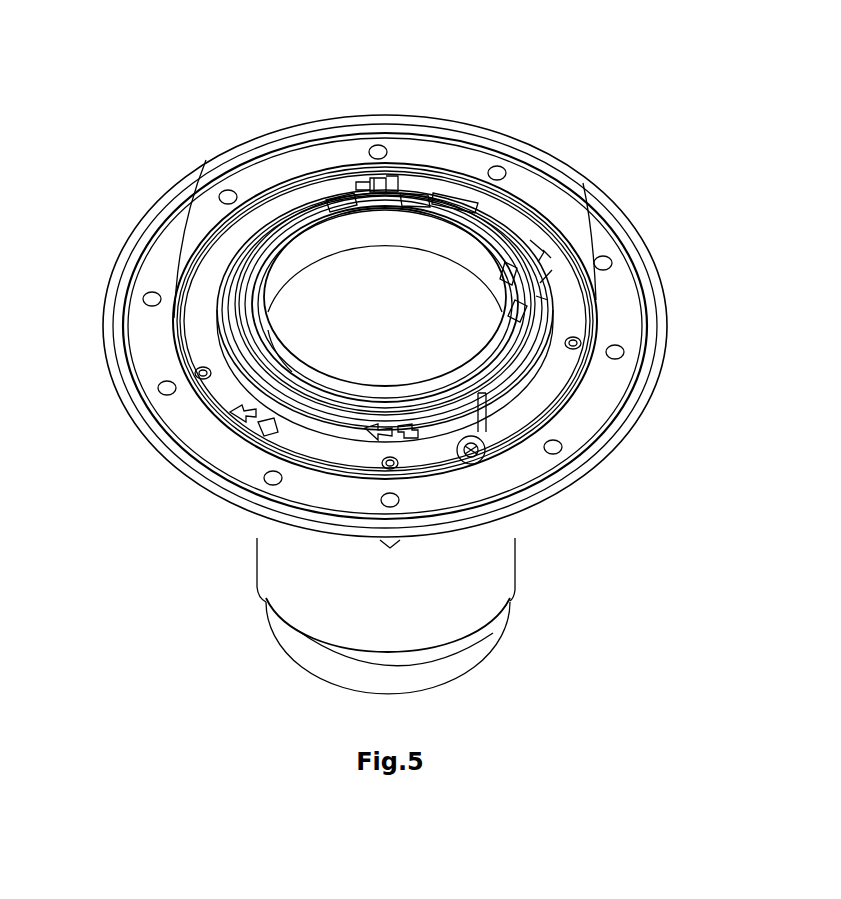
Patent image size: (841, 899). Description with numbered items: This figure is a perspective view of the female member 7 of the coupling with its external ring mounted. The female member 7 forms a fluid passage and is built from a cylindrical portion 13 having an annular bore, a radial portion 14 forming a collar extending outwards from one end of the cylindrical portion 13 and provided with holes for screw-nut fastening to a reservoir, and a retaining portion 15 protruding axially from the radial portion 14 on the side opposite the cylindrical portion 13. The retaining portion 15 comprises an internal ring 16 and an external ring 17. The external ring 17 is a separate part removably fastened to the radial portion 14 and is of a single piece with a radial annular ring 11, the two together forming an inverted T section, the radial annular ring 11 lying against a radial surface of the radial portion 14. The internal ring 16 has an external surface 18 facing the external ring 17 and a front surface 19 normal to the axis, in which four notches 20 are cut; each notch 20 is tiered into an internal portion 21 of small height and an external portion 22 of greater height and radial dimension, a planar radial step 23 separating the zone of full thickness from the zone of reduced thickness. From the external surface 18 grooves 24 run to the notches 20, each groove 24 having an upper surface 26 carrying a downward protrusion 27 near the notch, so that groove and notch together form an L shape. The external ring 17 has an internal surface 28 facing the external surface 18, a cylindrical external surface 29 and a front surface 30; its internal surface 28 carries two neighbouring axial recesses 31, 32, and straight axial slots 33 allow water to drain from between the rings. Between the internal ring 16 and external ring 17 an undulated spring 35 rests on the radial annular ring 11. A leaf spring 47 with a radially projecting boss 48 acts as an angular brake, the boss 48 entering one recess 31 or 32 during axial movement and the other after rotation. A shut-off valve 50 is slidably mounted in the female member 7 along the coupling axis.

The female member 7 is at (573, 95).
The radial annular ring 11 is at (566, 329).
The cylindrical portion 13 is at (379, 613).
The radial portion 14 is at (583, 183).
The retaining portion 15 is at (305, 364).
The internal ring 16 is at (303, 330).
The external ring 17 is at (428, 187).
The external surface 18 is at (245, 322).
The front surface 19 is at (325, 207).
The notches 20 is at (510, 282).
The internal portion 21 is at (404, 196).
The external portion 22 is at (245, 250).
The planar radial step 23 is at (545, 282).
The grooves 24 is at (262, 375).
The upper surface 26 is at (290, 340).
The protrusion 27 is at (225, 257).
The internal surface 28 is at (403, 183).
The external surface 29 is at (482, 407).
The front surface 30 is at (543, 257).
The recess 31 is at (258, 522).
The recess 32 is at (222, 357).
The slots 33 is at (545, 255).
The spring 35 is at (242, 262).
The leaf spring 47 is at (545, 296).
The boss 48 is at (265, 330).
The shut-off valve 50 is at (290, 656).